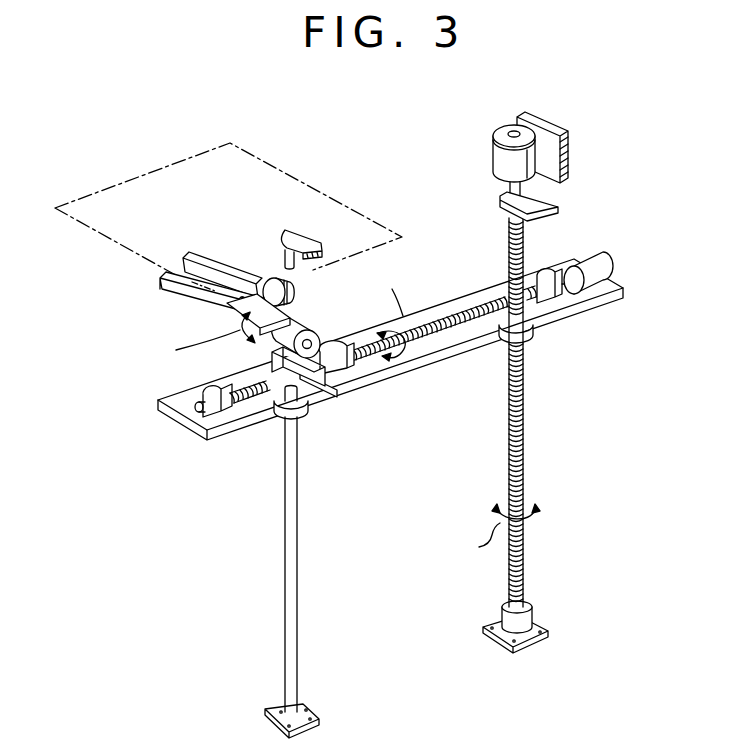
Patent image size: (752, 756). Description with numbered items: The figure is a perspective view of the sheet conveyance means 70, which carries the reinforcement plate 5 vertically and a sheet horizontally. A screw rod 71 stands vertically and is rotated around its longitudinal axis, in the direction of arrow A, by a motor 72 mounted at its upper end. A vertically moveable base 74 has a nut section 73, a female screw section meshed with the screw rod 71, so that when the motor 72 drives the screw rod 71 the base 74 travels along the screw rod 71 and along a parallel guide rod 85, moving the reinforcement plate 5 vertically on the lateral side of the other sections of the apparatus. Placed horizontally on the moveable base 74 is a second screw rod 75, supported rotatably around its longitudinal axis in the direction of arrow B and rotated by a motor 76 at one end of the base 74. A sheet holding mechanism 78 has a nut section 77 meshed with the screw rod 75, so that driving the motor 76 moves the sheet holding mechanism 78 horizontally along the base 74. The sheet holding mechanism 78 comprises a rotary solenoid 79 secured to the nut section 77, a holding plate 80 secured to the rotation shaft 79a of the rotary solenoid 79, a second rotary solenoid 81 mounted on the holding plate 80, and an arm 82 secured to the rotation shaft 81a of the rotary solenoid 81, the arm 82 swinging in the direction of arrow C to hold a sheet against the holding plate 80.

The reinforcement plate 5 is at (305, 183).
The sheet conveyance means 70 is at (401, 119).
The screw rod 71 is at (522, 443).
The motor 72 is at (493, 170).
The nut section 73 is at (530, 335).
The vertically moveable base 74 is at (455, 348).
The screw rod 75 is at (437, 318).
The motor 76 is at (593, 263).
The nut section 77 is at (350, 363).
The sheet holding mechanism 78 is at (143, 270).
The rotary solenoid 79 is at (308, 326).
The rotation shaft 79a is at (267, 338).
The holding plate 80 is at (163, 288).
The rotary solenoid 81 is at (280, 278).
The rotation shaft 81a is at (240, 318).
The arm 82 is at (200, 255).
The guide rod 85 is at (290, 563).